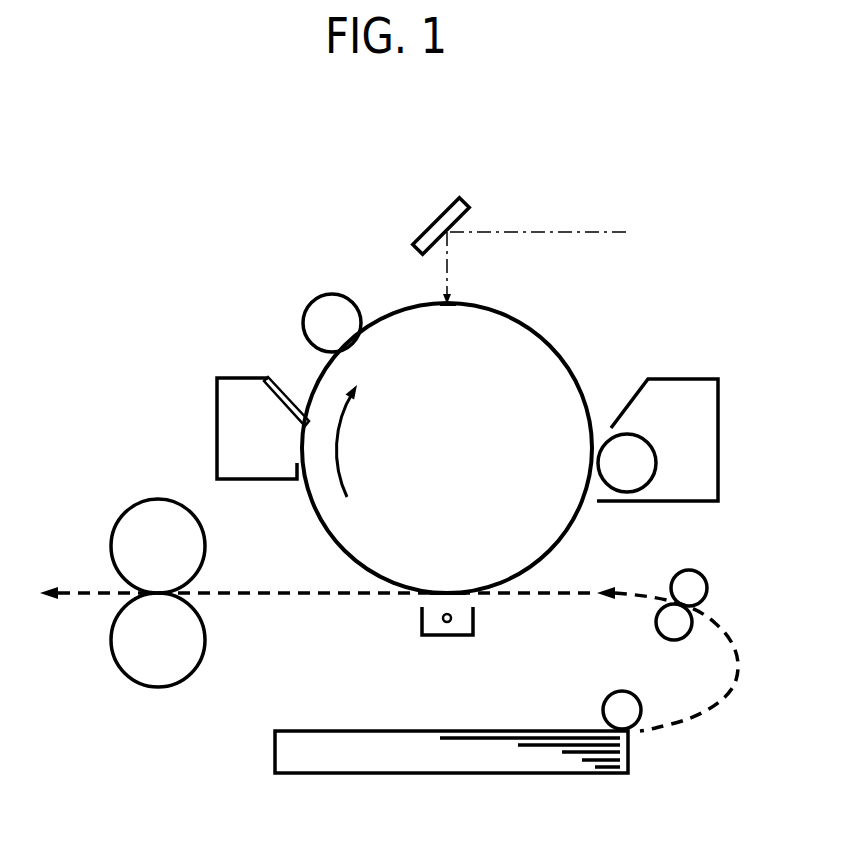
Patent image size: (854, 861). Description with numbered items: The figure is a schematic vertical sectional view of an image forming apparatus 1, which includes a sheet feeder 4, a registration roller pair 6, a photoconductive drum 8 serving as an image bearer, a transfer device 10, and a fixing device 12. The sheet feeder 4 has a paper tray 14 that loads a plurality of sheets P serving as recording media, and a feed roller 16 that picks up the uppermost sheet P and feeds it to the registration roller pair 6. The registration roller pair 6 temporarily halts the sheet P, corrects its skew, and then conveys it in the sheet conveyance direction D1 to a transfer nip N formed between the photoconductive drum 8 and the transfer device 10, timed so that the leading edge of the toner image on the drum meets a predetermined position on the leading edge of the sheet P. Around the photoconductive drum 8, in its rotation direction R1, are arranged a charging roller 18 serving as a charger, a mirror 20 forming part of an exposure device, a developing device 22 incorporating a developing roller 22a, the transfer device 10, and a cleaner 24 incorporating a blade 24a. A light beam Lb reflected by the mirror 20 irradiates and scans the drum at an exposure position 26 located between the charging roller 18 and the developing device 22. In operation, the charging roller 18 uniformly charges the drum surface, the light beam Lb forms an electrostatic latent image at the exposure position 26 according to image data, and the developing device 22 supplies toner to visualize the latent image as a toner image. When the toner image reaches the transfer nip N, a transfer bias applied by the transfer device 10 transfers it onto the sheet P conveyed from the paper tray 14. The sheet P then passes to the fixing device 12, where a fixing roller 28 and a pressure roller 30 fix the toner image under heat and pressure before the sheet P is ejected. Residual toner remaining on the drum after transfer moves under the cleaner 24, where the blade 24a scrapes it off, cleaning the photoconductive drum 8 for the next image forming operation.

The image forming apparatus 1 is at (655, 272).
The sheet feeder 4 is at (543, 780).
The registration roller pair 6 is at (690, 633).
The photoconductive drum 8 is at (543, 329).
The transfer device 10 is at (422, 623).
The fixing device 12 is at (124, 500).
The paper tray 14 is at (375, 775).
The feed roller 16 is at (613, 694).
The charging roller 18 is at (314, 301).
The mirror 20 is at (435, 222).
The developing device 22 is at (706, 374).
The developing roller 22a is at (648, 444).
The cleaner 24 is at (217, 405).
The blade 24a is at (287, 381).
The exposure position 26 is at (450, 304).
The fixing roller 28 is at (111, 537).
The pressure roller 30 is at (112, 633).
The light beam Lb is at (535, 232).
The rotation direction R1 is at (356, 441).
The transfer nip N is at (449, 589).
The sheet conveyance direction D1 is at (389, 646).
The sheet P is at (490, 737).